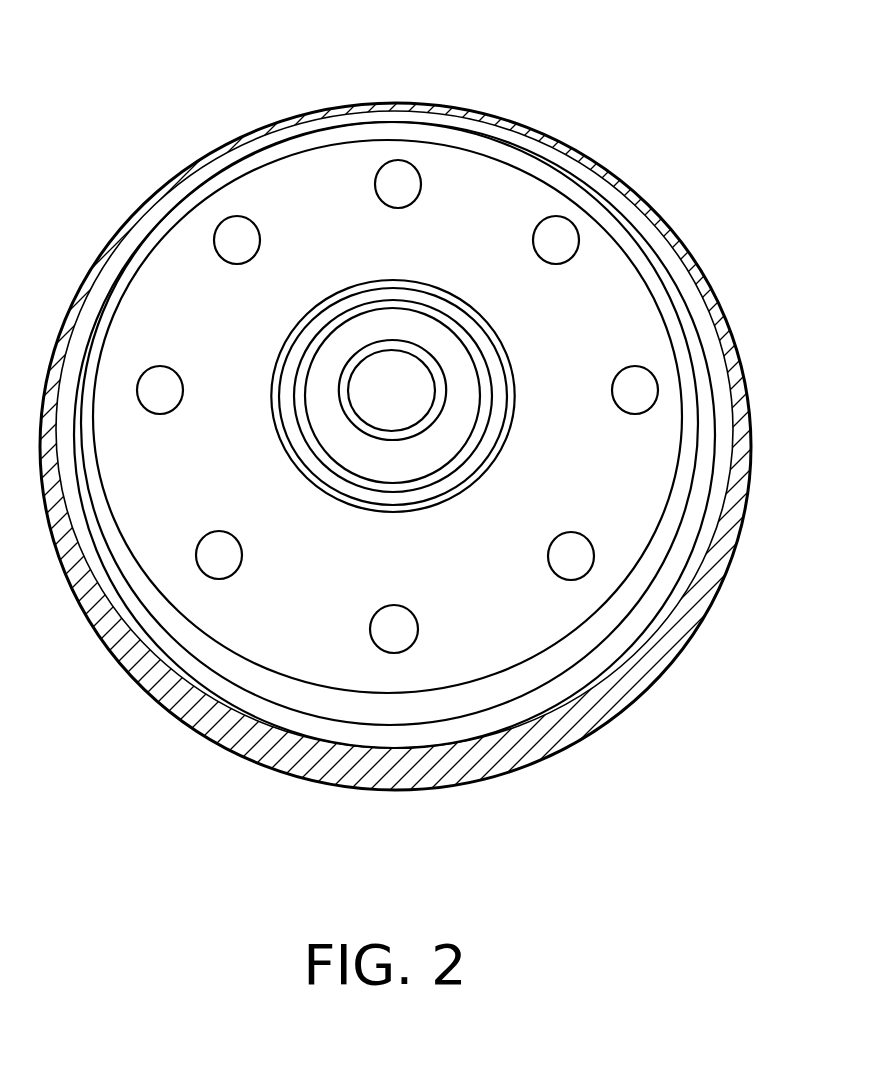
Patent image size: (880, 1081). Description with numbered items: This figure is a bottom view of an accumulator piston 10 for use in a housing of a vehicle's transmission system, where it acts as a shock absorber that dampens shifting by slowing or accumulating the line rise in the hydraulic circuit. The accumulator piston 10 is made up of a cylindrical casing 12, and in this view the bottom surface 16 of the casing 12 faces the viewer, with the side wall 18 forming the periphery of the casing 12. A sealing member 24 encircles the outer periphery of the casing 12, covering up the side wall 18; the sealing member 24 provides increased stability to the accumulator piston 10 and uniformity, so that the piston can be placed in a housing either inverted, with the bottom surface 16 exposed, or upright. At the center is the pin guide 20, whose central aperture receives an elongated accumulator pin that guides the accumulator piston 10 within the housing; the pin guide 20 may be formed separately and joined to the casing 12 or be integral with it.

The accumulator piston 10 is at (400, 431).
The cylindrical casing 12 is at (633, 340).
The bottom surface 16 is at (427, 416).
The side wall 18 is at (607, 650).
The pin guide 20 is at (399, 453).
The sealing member 24 is at (301, 763).